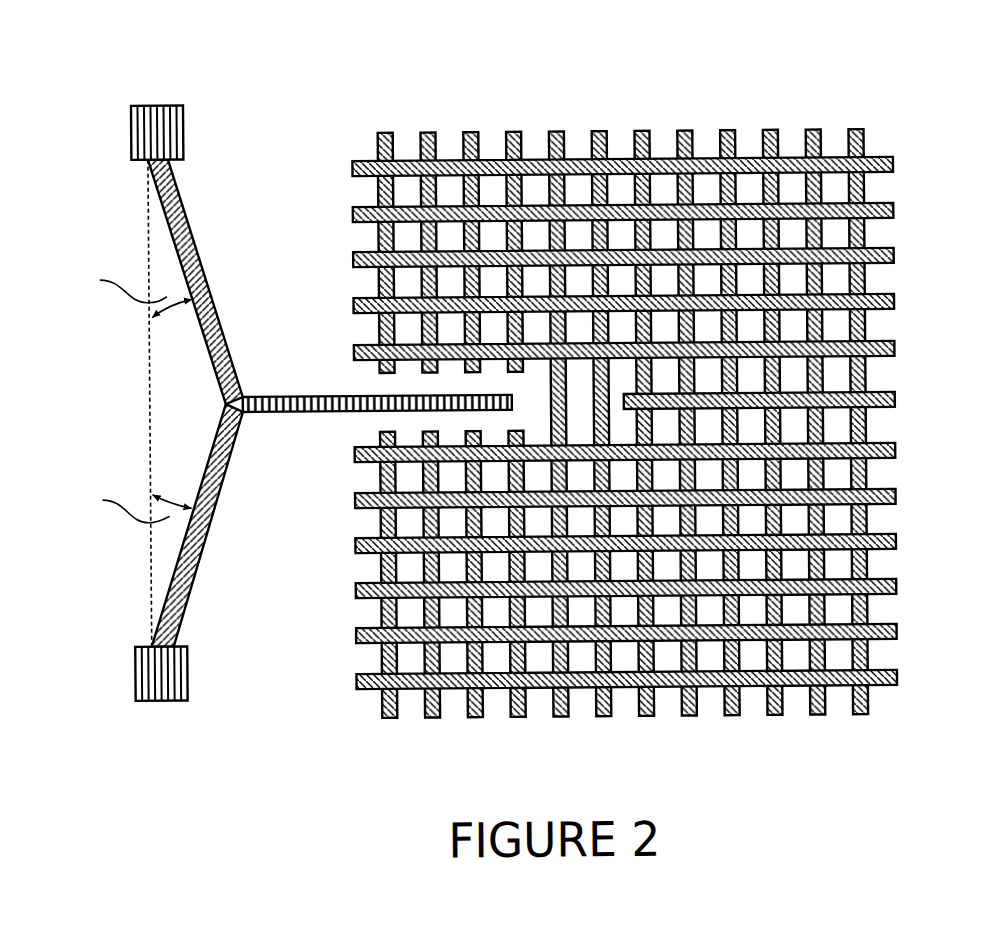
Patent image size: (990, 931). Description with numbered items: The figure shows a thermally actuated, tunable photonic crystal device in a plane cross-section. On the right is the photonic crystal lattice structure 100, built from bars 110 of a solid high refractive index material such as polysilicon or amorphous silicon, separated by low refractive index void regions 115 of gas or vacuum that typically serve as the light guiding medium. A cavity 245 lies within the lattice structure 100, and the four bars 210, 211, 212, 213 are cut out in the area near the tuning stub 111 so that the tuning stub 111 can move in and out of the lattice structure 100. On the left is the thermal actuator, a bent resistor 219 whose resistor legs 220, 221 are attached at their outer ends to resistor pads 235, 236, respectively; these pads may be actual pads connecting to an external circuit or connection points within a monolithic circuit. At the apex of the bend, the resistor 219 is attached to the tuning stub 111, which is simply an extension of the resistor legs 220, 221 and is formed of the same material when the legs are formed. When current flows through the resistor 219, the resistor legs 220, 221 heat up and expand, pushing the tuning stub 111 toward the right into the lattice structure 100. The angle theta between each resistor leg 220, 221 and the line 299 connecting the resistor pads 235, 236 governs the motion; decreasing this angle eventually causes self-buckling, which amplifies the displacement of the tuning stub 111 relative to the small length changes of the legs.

The photonic crystal lattice structure 100 is at (841, 42).
The bars 110 is at (662, 388).
The tuning stub 111 is at (269, 394).
The void regions 115 is at (838, 388).
The bar 210 is at (387, 131).
The bar 211 is at (430, 131).
The bar 212 is at (473, 131).
The bar 213 is at (516, 131).
The resistor 219 is at (162, 409).
The resistor leg 220 is at (181, 584).
The resistor leg 221 is at (184, 243).
The resistor pad 235 is at (163, 697).
The resistor pad 236 is at (161, 102).
The cavity 245 is at (578, 400).
The line 299 is at (150, 401).